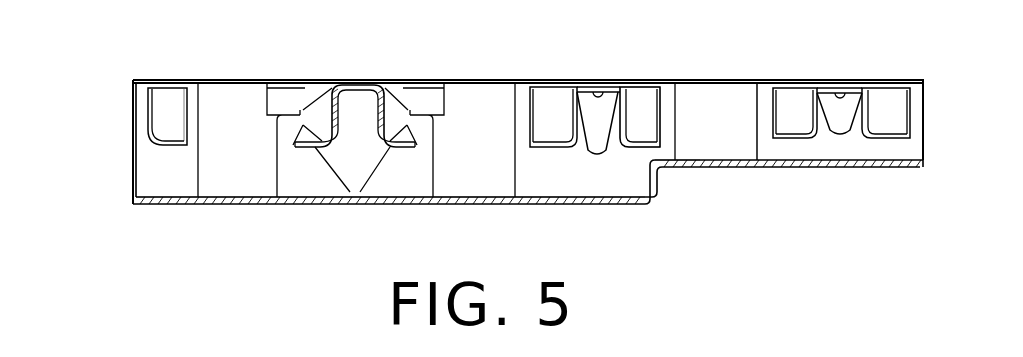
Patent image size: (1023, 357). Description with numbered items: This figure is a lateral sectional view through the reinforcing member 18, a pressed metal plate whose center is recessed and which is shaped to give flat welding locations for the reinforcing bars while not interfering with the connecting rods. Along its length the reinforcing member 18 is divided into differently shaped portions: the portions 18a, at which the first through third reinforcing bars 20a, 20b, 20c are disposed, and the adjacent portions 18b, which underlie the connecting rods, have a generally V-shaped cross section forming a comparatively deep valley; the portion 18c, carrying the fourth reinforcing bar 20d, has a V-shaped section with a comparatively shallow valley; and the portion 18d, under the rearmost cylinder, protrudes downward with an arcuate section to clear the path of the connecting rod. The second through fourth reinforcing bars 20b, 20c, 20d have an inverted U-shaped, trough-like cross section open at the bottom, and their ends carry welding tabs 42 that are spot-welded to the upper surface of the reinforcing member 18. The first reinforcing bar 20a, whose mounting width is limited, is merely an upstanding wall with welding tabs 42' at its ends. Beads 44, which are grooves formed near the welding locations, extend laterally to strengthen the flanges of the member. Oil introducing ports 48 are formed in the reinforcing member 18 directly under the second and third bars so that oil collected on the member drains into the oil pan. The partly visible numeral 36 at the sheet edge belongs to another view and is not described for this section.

The reinforcing member 18 is at (240, 80).
The portions of the reinforcing member 18a is at (160, 188).
The portions of the reinforcing member 18b is at (232, 186).
The portion of the reinforcing member 18c is at (800, 148).
The portion of the reinforcing member 18d is at (706, 148).
The first reinforcing bar 20a is at (147, 102).
The second reinforcing bar 20b is at (360, 86).
The third reinforcing bar 20c is at (597, 86).
The fourth reinforcing bar 20d is at (840, 90).
The partial numeral of adjacent figure 36 is at (575, 352).
The welding tabs 42 is at (802, 117).
The welding tabs 42' is at (211, 126).
The beads 44 is at (595, 145).
The oil introducing ports 48 is at (362, 195).